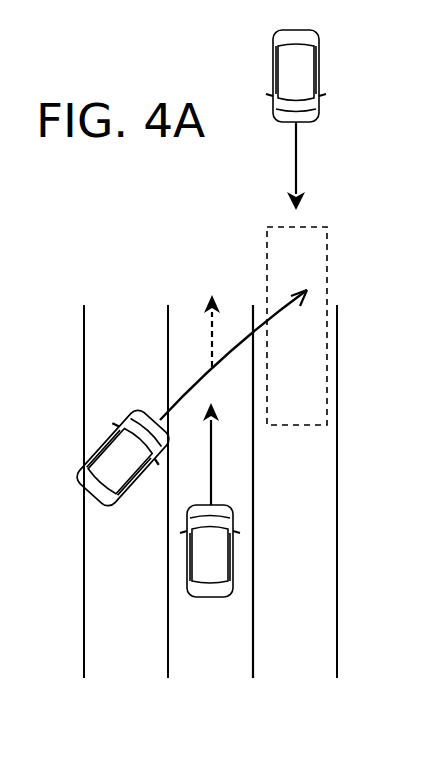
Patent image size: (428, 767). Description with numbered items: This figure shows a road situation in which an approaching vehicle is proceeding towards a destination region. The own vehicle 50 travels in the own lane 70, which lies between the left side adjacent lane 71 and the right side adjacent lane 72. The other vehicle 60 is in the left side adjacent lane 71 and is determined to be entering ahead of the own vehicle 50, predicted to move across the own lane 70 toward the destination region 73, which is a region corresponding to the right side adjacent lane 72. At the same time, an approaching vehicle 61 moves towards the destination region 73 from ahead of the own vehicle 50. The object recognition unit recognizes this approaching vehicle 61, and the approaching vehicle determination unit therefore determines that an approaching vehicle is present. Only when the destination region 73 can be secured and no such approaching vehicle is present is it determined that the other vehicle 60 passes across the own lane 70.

The own vehicle 50 is at (232, 578).
The other vehicle 60 is at (96, 458).
The approaching vehicle 61 is at (318, 40).
The own lane 70 is at (220, 660).
The left side adjacent lane 71 is at (136, 660).
The right side adjacent lane 72 is at (306, 660).
The destination region 73 is at (328, 265).